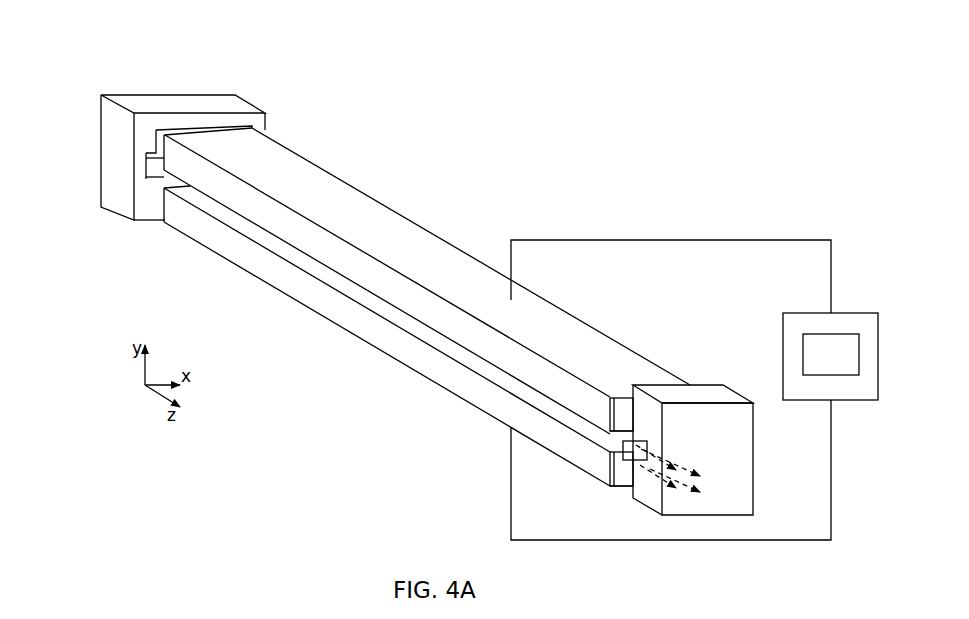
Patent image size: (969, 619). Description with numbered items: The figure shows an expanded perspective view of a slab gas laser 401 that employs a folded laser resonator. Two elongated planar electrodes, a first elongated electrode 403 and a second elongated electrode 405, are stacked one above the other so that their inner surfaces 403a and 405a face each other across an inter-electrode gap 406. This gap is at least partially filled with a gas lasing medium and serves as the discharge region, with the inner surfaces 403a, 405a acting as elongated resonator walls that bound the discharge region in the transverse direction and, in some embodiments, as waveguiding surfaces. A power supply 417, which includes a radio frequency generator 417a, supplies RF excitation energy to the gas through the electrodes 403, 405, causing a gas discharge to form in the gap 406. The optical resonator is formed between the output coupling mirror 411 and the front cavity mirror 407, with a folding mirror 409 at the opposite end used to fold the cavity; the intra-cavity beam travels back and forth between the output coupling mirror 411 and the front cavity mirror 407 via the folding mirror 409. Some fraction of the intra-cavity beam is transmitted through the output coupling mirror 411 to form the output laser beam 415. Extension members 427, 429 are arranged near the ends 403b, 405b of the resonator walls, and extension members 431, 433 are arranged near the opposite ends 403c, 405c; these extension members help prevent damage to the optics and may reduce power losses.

The slab gas laser 401 is at (538, 171).
The first elongated electrode 403 is at (375, 226).
The inner surface of first electrode 403a is at (324, 268).
The end of first electrode 403b is at (621, 398).
The end of first electrode 403c is at (177, 132).
The second elongated electrode 405 is at (310, 297).
The inner surface of second electrode 405a is at (292, 258).
The end of second electrode 405b is at (608, 492).
The end of second electrode 405c is at (167, 223).
The inter-electrode gap 406 is at (230, 221).
The front cavity mirror 407 is at (730, 392).
The folding mirror 409 is at (112, 153).
The output coupling mirror 411 is at (630, 461).
The output laser beam 415 is at (648, 482).
The power supply 417 is at (814, 313).
The radio frequency generator 417a is at (831, 354).
The extension member 427 is at (608, 412).
The extension member 429 is at (612, 460).
The extension member 431 is at (157, 220).
The extension member 433 is at (196, 131).